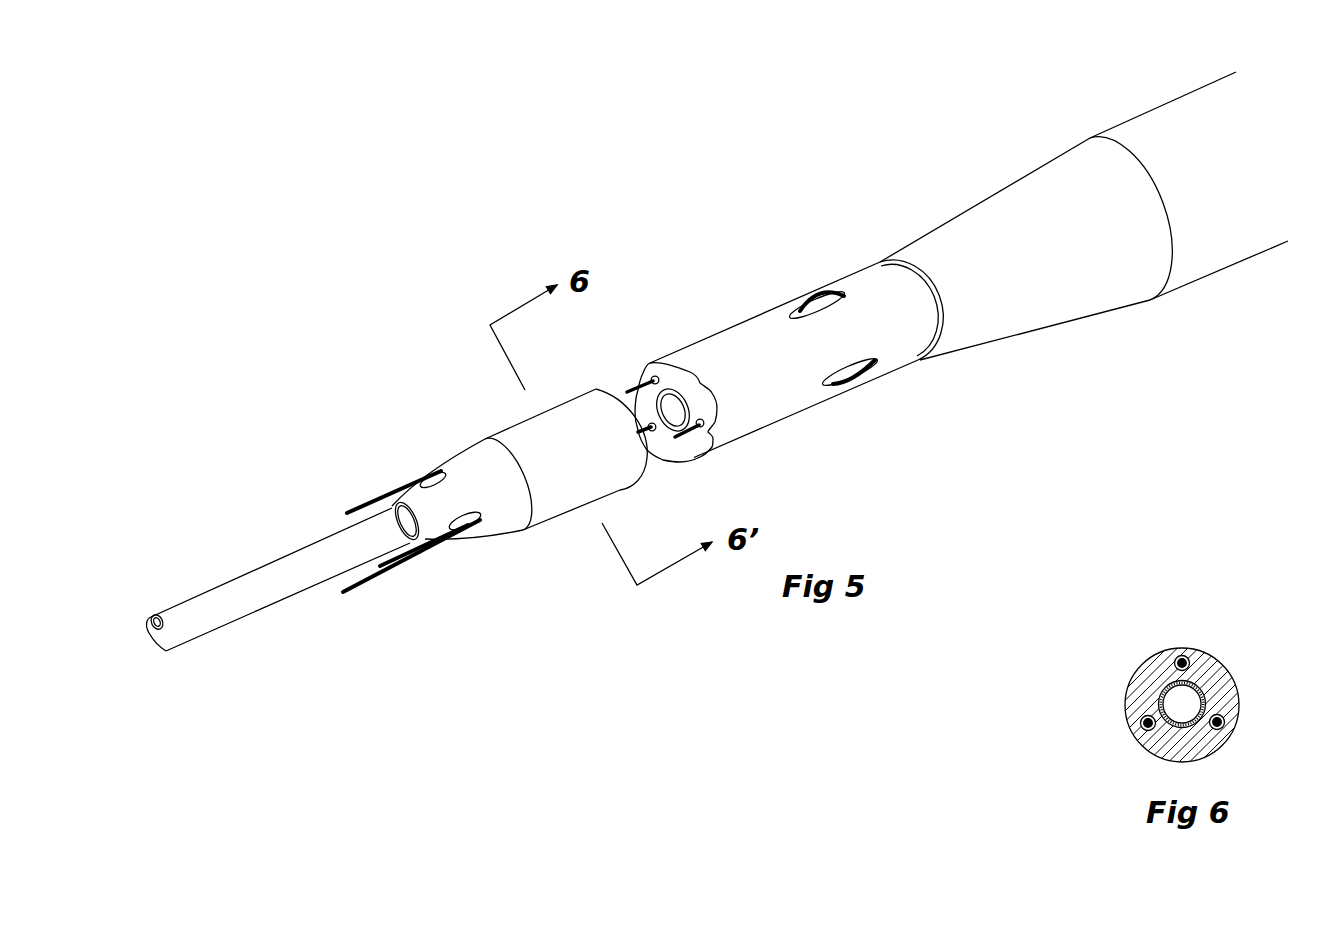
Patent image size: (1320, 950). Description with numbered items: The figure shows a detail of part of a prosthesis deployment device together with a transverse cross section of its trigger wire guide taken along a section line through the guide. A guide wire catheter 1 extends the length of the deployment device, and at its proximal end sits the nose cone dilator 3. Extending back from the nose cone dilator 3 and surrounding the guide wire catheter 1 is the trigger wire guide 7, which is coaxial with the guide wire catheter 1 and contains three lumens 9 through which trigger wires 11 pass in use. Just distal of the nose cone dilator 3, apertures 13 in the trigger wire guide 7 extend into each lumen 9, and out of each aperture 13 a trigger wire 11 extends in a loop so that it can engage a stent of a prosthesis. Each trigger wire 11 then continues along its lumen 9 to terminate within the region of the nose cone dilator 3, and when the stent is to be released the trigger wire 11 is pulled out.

In FIG. 5, the guide wire catheter 1 is at (293, 573).
In FIG. 6, the guide wire catheter 1 is at (1150, 698).
In FIG. 5, the nose cone dilator 3 is at (1046, 318).
In FIG. 5, the trigger wire guide 7 is at (554, 426).
In FIG. 6, the trigger wire guide 7 is at (1218, 677).
In FIG. 5, the lumen 9 is at (465, 531).
In FIG. 6, the lumen 9 is at (1226, 722).
In FIG. 5, the trigger wire 11 is at (381, 499).
In FIG. 6, the trigger wire 11 is at (1225, 728).
In FIG. 5, the aperture 13 is at (826, 290).